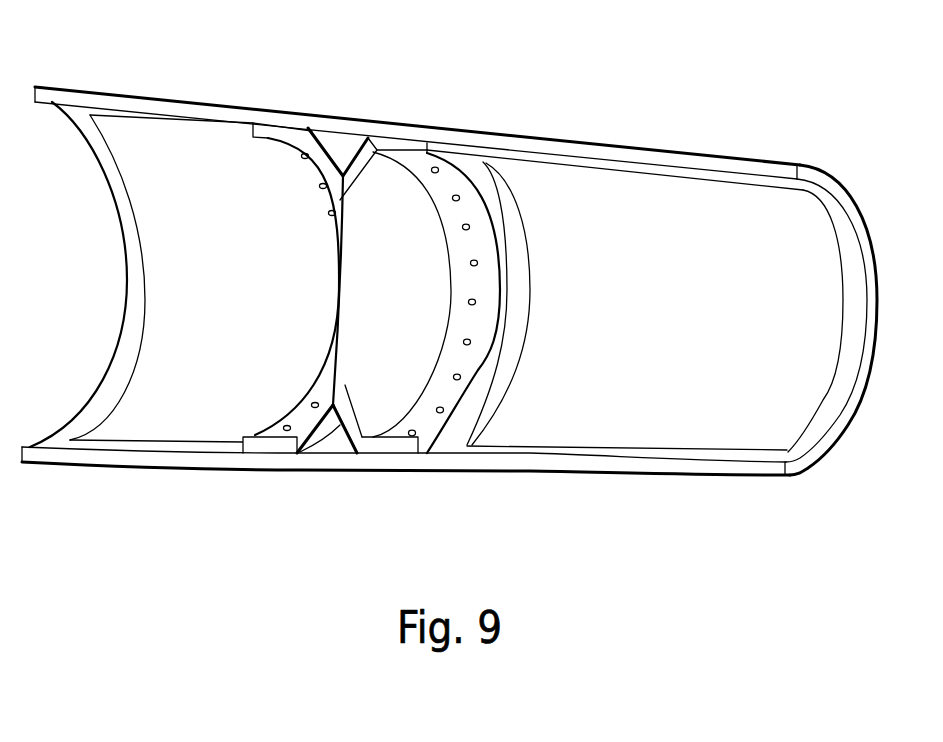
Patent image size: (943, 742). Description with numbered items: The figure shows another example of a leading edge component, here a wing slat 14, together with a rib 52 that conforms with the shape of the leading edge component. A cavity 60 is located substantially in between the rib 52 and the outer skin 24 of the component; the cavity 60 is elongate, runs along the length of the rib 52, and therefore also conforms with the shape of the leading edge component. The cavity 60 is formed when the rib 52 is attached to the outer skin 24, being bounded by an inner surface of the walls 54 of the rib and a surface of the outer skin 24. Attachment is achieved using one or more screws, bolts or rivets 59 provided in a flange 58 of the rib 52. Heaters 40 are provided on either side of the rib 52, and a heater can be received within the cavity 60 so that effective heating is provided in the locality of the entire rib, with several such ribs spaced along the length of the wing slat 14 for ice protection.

The wing slat 14 is at (718, 130).
The outer skin 24 is at (118, 100).
The heater 40 is at (195, 215).
The rib 52 is at (362, 293).
The walls 54 is at (410, 217).
The flange 58 is at (480, 285).
The screws, bolts or rivets 59 is at (471, 342).
The cavity 60 is at (341, 145).